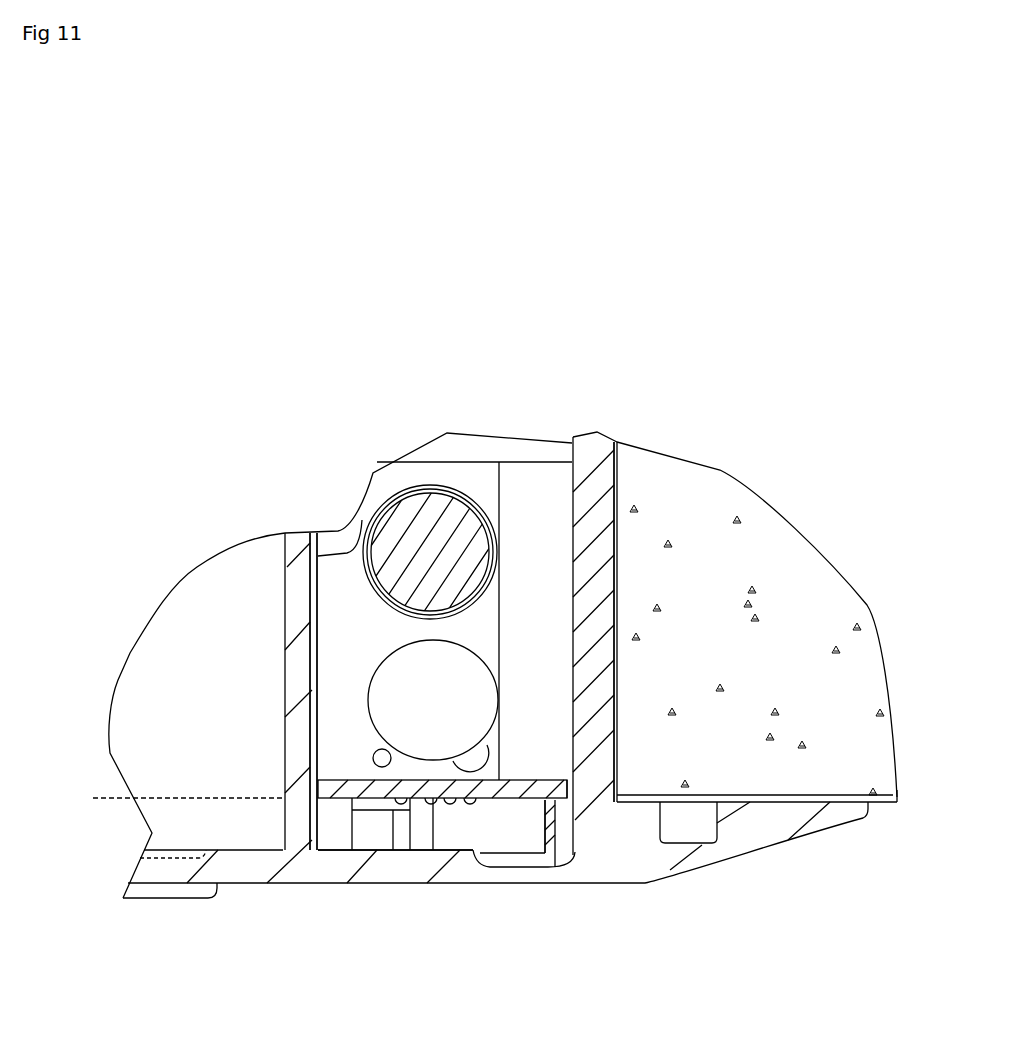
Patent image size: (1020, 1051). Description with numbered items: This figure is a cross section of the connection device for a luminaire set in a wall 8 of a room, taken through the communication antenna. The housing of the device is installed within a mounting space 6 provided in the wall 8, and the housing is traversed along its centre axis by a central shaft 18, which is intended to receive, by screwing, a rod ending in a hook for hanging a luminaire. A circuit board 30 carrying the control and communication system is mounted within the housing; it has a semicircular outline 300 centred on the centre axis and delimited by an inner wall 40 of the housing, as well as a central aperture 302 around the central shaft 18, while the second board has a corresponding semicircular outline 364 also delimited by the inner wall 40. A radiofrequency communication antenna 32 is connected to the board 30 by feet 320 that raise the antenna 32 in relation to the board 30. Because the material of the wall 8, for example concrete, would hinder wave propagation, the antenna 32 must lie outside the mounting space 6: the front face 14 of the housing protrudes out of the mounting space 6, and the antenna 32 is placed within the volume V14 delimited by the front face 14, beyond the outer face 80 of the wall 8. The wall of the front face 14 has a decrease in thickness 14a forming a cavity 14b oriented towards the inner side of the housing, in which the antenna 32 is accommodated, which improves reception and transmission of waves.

The mounting space 6 is at (612, 537).
The wall 8 is at (722, 555).
The front face 14 is at (762, 838).
The decrease in thickness 14a is at (505, 830).
The cavity 14b is at (522, 846).
The volume delimited by the front face V14 is at (93, 802).
The central shaft 18 is at (297, 613).
The circuit board 30 is at (490, 790).
The radiofrequency communication antenna 32 is at (540, 870).
The inner wall 40 is at (570, 635).
The outer face 80 is at (699, 808).
The semicircular outline 300 is at (571, 792).
The central aperture 302 is at (314, 788).
The feet 320 is at (558, 830).
The semicircular outline 364 is at (578, 444).